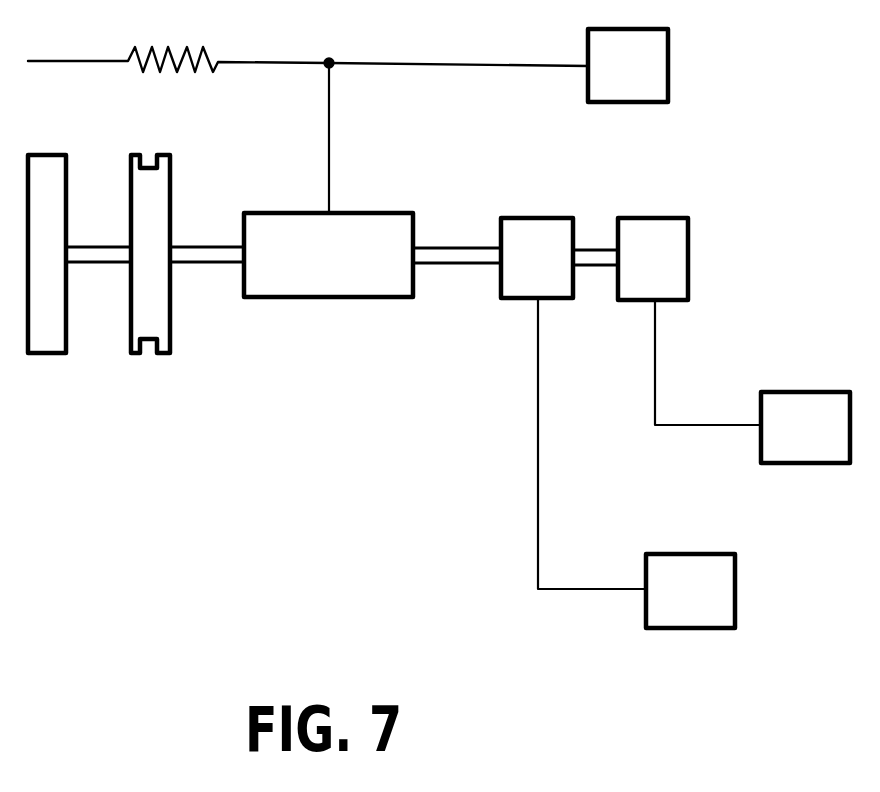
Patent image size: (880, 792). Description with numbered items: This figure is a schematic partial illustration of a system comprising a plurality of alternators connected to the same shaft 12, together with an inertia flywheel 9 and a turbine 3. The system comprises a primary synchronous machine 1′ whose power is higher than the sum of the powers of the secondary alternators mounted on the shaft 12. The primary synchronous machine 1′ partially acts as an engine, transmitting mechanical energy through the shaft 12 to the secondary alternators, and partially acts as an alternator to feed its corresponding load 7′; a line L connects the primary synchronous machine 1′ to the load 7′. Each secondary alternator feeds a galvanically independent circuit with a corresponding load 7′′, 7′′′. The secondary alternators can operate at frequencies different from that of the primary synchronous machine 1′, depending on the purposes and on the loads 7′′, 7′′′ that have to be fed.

The inductance / line L is at (308, 38).
The turbine 3 is at (43, 333).
The inertia flywheel 9 is at (149, 324).
The shaft 12 is at (447, 247).
The primary synchronous machine 1′ is at (328, 255).
The load 7′ is at (628, 65).
The load 7′′ is at (690, 591).
The load 7′′′ is at (805, 427).